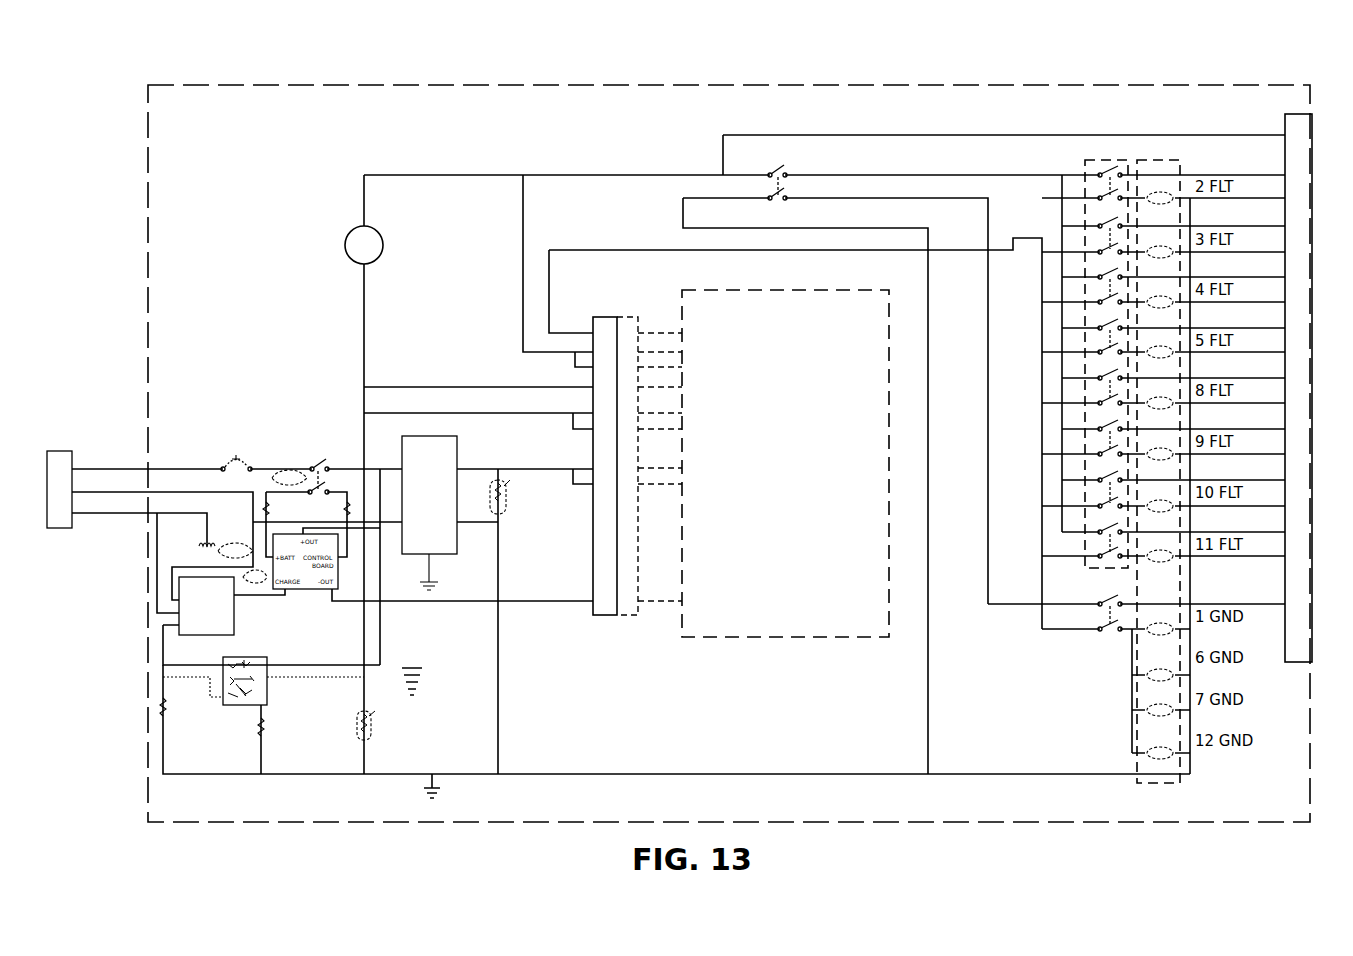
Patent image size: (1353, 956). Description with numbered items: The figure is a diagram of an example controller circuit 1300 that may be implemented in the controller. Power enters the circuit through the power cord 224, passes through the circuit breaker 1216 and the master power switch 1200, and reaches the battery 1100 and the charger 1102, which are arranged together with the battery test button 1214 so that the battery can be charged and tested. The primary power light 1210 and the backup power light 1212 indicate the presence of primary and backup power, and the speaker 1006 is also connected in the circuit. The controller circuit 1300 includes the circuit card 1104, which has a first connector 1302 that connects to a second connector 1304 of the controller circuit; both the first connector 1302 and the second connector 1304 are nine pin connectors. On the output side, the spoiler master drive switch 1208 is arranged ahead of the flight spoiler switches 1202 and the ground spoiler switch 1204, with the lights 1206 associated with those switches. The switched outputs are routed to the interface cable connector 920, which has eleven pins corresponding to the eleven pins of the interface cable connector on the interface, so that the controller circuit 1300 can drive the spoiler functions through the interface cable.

The controller circuit 1300 is at (228, 80).
The interface cable connector 920 is at (1312, 110).
The spoiler master drive switch 1208 is at (777, 158).
The flight spoiler switches 1202 is at (1091, 157).
The lights 1206 is at (1156, 157).
The ground spoiler switch 1204 is at (1094, 653).
The speaker 1006 is at (349, 234).
The second connector 1304 is at (606, 316).
The first connector 1302 is at (628, 316).
The circuit card 1104 is at (785, 463).
The power cord 224 is at (105, 444).
The circuit breaker 1216 is at (238, 447).
The master power switch 1200 is at (321, 457).
The primary power light 1210 is at (512, 502).
The battery 1100 is at (443, 542).
The charger 1102 is at (234, 613).
The battery test button 1214 is at (264, 649).
The backup power light 1212 is at (379, 720).